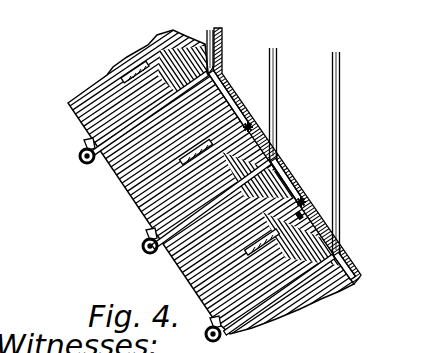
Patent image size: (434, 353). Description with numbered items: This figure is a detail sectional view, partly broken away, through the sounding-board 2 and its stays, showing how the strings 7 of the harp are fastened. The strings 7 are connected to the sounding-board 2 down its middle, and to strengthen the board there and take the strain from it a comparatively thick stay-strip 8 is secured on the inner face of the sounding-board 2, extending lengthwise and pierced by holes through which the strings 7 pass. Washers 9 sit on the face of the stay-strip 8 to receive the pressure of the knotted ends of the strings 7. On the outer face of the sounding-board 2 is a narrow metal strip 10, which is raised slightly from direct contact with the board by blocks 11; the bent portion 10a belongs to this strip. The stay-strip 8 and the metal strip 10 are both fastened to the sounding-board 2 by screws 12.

The sounding-board 2 is at (346, 291).
The strings 7 is at (215, 42).
The stay-strip 8 is at (136, 186).
The washers 9 is at (146, 226).
The metal strip 10 is at (232, 96).
The bent end of brace rod 10a is at (216, 75).
The blocks 11 is at (251, 126).
The screws 12 is at (300, 216).